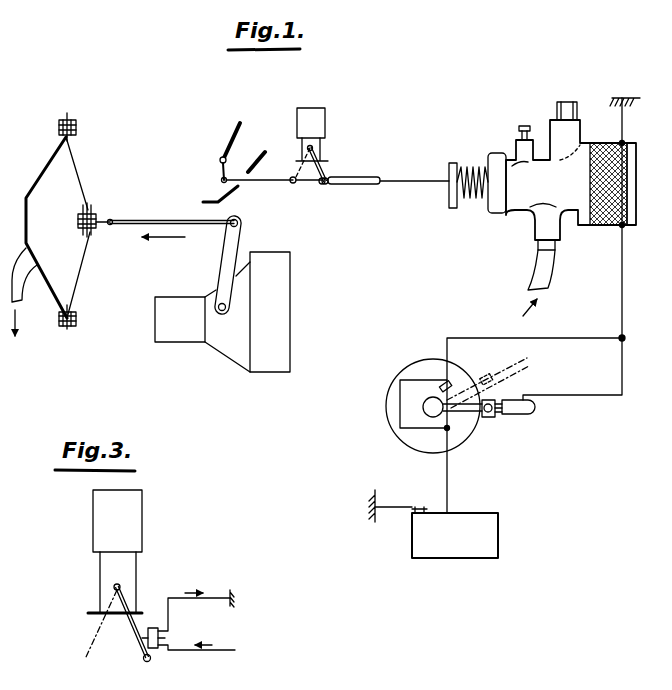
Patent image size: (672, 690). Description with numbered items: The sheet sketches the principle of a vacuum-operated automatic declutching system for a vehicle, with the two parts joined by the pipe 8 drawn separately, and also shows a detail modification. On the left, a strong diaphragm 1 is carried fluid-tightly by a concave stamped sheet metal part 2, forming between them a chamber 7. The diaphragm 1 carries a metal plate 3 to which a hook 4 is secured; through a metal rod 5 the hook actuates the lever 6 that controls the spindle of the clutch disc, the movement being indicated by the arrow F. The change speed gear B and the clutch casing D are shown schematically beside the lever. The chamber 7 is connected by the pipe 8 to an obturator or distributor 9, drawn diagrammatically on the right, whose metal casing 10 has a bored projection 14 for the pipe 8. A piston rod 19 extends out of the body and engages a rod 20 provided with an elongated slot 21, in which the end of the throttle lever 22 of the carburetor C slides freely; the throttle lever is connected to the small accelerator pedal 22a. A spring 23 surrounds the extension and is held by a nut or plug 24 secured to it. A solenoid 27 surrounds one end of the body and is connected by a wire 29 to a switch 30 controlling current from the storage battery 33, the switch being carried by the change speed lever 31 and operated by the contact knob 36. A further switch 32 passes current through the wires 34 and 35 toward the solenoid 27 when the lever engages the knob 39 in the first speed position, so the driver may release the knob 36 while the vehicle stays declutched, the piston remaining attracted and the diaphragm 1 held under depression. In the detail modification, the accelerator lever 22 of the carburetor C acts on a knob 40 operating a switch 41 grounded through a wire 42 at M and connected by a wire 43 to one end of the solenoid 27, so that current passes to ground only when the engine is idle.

In FIG. 1, the diaphragm 1 is at (84, 170).
In FIG. 1, the concave stamped sheet metal part 2 is at (45, 164).
In FIG. 1, the metal plate 3 is at (92, 206).
In FIG. 1, the hook 4 is at (107, 228).
In FIG. 1, the metal rod 5 is at (165, 221).
In FIG. 1, the lever 6 is at (225, 268).
In FIG. 1, the chamber 7 is at (50, 254).
In FIG. 1, the pipe 8 is at (31, 296).
In FIG. 1, the obturator or distributor 9 is at (515, 202).
In FIG. 1, the metal casing 10 is at (560, 128).
In FIG. 1, the projection 14 is at (538, 228).
In FIG. 1, the piston rod 19 is at (490, 165).
In FIG. 1, the rod 20 is at (395, 180).
In FIG. 1, the elongated slot 21 is at (360, 185).
In FIG. 1, the throttle lever 22 is at (330, 179).
In FIG. 3, the throttle lever 22 is at (133, 628).
In FIG. 1, the accelerator pedal 22a is at (238, 127).
In FIG. 1, the spring 23 is at (465, 170).
In FIG. 1, the nut or plug 24 is at (455, 200).
In FIG. 1, the solenoid 27 is at (603, 228).
In FIG. 1, the wire 29 is at (620, 285).
In FIG. 1, the switch 30 is at (493, 416).
In FIG. 1, the change speed lever 31 is at (533, 415).
In FIG. 1, the switch 32 is at (446, 382).
In FIG. 1, the storage battery 33 is at (490, 532).
In FIG. 1, the wire 34 is at (558, 338).
In FIG. 1, the wire 35 is at (400, 406).
In FIG. 1, the contact knob 36 is at (487, 418).
In FIG. 1, the knob 39 is at (460, 385).
In FIG. 3, the knob 40 is at (150, 630).
In FIG. 3, the switch 41 is at (160, 638).
In FIG. 3, the wire 42 is at (217, 598).
In FIG. 3, the wire 43 is at (218, 651).
In FIG. 1, the change speed gear B is at (182, 334).
In FIG. 1, the carburetor C is at (300, 121).
In FIG. 3, the carburetor C is at (100, 513).
In FIG. 1, the clutch casing D is at (278, 257).
In FIG. 1, the force direction F is at (163, 248).
In FIG. 1, the ground M is at (352, 496).
In FIG. 3, the ground M is at (233, 598).